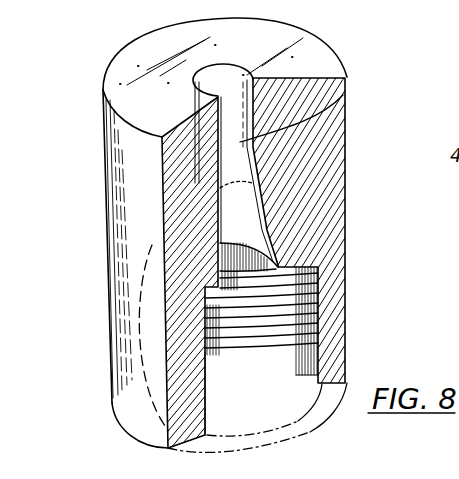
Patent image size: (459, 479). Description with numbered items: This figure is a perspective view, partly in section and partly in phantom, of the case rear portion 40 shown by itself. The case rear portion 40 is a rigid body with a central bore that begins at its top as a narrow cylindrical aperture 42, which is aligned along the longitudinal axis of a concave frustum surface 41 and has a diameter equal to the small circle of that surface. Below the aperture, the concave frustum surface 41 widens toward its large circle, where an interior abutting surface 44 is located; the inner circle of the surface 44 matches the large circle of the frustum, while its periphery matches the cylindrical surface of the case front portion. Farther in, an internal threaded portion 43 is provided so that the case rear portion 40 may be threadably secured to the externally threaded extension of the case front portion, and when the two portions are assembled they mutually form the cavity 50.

The case rear portion 40 is at (97, 165).
The concave frustum surface 41 is at (222, 203).
The narrow cylindrical aperture 42 is at (226, 80).
The internal threaded portion 43 is at (285, 340).
The interior abutting surface 44 is at (319, 279).
The cavity 50 is at (277, 402).